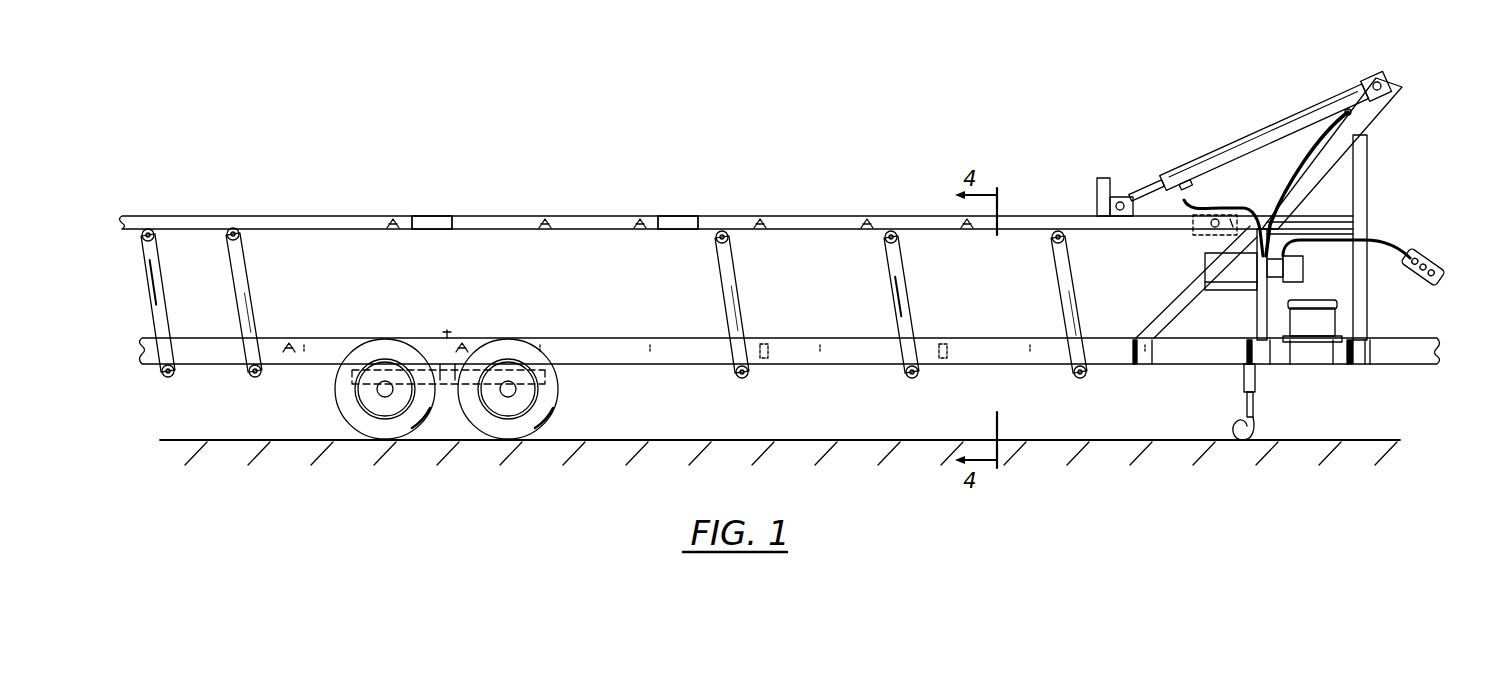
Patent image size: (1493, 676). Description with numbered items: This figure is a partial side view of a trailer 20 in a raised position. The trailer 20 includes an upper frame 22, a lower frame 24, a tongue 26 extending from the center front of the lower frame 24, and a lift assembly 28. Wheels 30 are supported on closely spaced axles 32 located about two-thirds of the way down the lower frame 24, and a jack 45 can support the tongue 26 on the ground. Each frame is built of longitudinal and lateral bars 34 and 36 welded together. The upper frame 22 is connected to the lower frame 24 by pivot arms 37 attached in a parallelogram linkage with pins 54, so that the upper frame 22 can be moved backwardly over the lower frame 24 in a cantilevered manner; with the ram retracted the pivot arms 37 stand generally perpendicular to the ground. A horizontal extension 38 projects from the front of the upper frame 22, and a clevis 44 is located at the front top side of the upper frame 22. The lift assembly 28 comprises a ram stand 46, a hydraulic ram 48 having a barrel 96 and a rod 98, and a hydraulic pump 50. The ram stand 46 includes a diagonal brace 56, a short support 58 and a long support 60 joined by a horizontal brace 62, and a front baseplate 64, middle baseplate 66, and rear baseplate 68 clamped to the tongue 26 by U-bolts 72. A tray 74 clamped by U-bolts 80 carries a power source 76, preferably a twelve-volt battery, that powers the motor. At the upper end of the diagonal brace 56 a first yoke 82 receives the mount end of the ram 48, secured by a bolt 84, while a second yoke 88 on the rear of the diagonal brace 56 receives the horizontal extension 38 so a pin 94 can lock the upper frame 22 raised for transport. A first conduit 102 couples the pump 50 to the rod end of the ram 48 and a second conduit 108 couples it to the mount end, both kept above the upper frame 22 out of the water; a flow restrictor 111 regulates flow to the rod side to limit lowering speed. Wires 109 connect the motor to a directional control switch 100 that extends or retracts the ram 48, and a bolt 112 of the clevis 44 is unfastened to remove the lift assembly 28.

The trailer 20 is at (497, 143).
The upper frame 22 is at (437, 213).
The lower frame 24 is at (615, 368).
The tongue 26 is at (1428, 342).
The lift assembly 28 is at (1400, 185).
The wheels 30 is at (487, 432).
The axle 32 is at (388, 386).
The longitudinal bars 34 is at (690, 214).
The lateral bars 36 is at (543, 214).
The pivot arms 37 is at (232, 283).
The horizontal extension 38 is at (1134, 229).
The clevis 44 is at (1108, 178).
The jack 45 is at (1240, 391).
The ram stand 46 is at (1378, 162).
The hydraulic ram 48 is at (1258, 135).
The hydraulic pump 50 is at (1240, 282).
The pins 54 is at (230, 238).
The diagonal brace 56 is at (1315, 163).
The short support 58 is at (1252, 318).
The long support 60 is at (1368, 137).
The horizontal brace 62 is at (1334, 228).
The front baseplate 64 is at (1378, 343).
The middle baseplate 66 is at (1236, 335).
The rear baseplate 68 is at (1131, 337).
The U-bolts 72 is at (1149, 365).
The tray 74 is at (1340, 337).
The power source 76 is at (1336, 318).
The U-bolts 80 is at (1331, 366).
The first yoke 82 is at (1395, 83).
The bolt 84 is at (1375, 82).
The second yoke 88 is at (1182, 246).
The pin 94 is at (1218, 237).
The barrel 96 is at (1197, 168).
The rod 98 is at (1128, 196).
The directional control switch 100 is at (1430, 257).
The first conduit 102 is at (1228, 208).
The second conduit 108 is at (1298, 172).
The wires 109 is at (1385, 243).
The flow restrictor 111 is at (1195, 225).
The bolt 112 is at (1097, 201).